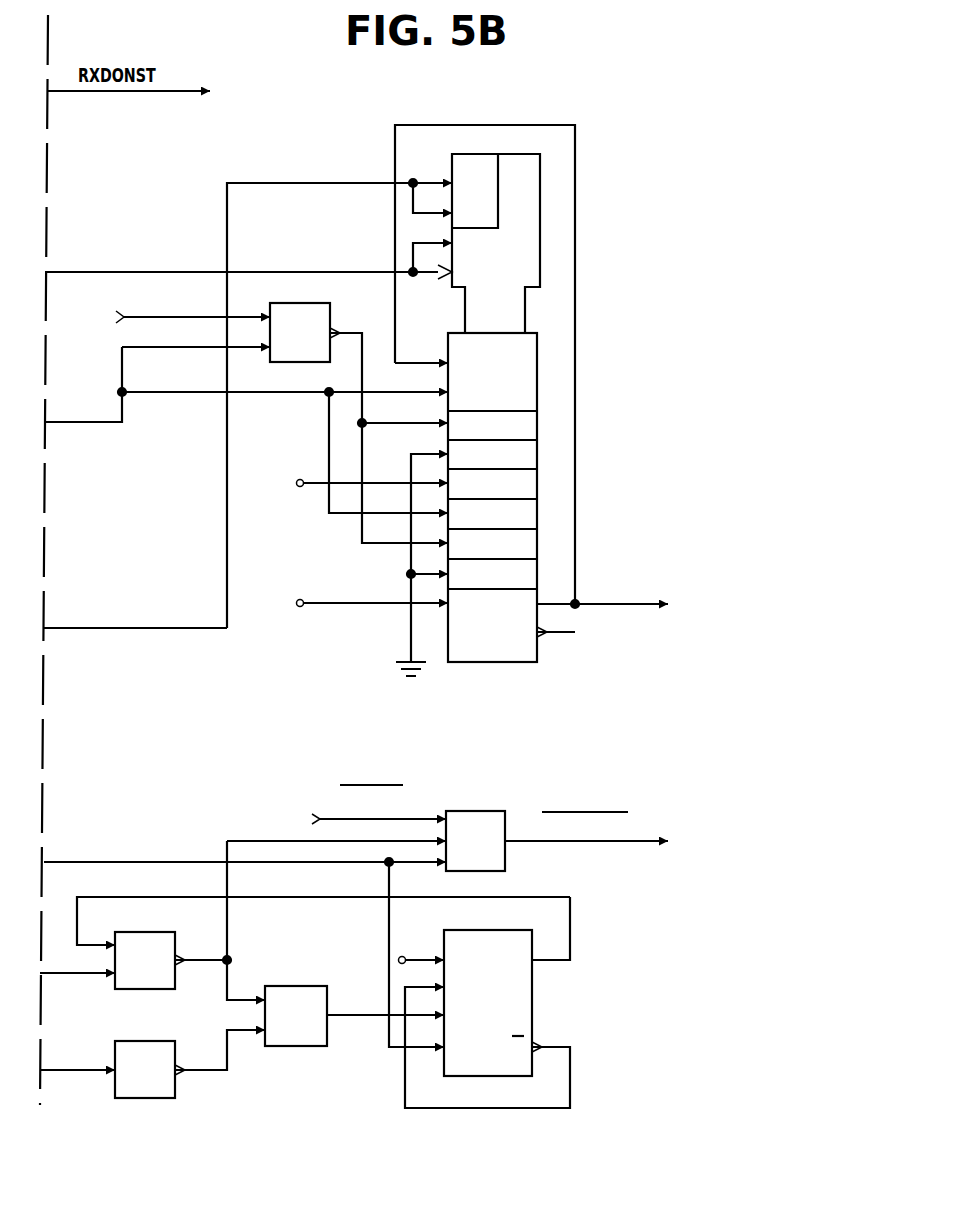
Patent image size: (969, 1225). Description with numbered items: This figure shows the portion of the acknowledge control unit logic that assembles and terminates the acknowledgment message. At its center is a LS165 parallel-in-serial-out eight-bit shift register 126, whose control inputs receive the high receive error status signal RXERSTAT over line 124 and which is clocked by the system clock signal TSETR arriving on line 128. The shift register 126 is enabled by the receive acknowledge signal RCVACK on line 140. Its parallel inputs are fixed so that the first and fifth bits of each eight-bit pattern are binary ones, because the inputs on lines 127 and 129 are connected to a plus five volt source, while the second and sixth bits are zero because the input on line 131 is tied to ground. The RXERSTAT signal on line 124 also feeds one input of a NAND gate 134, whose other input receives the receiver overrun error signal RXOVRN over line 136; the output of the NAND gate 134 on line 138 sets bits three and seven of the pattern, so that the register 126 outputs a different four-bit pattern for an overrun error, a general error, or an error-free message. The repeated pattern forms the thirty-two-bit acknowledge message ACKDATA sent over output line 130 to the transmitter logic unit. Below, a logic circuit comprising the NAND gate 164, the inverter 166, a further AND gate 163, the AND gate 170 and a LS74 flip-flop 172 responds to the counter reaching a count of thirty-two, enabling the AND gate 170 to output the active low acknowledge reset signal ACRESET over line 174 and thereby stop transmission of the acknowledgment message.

The line 124 is at (82, 423).
The LS165 parallel-in-serial-out 8-bit shift register 126 is at (530, 367).
The line 127 is at (352, 607).
The line 128 is at (225, 197).
The line 129 is at (312, 487).
The output line 130 is at (628, 607).
The line 131 is at (407, 645).
The NAND gate 134 is at (300, 303).
The line 136 is at (150, 317).
The line 138 is at (358, 532).
The line 140 is at (148, 270).
The AND gate 163 is at (305, 988).
The NAND gate 164 is at (140, 932).
The inverter 166 is at (148, 1041).
The AND gate 170 is at (470, 812).
The LS74 flip-flop 172 is at (483, 930).
The line 174 is at (615, 845).